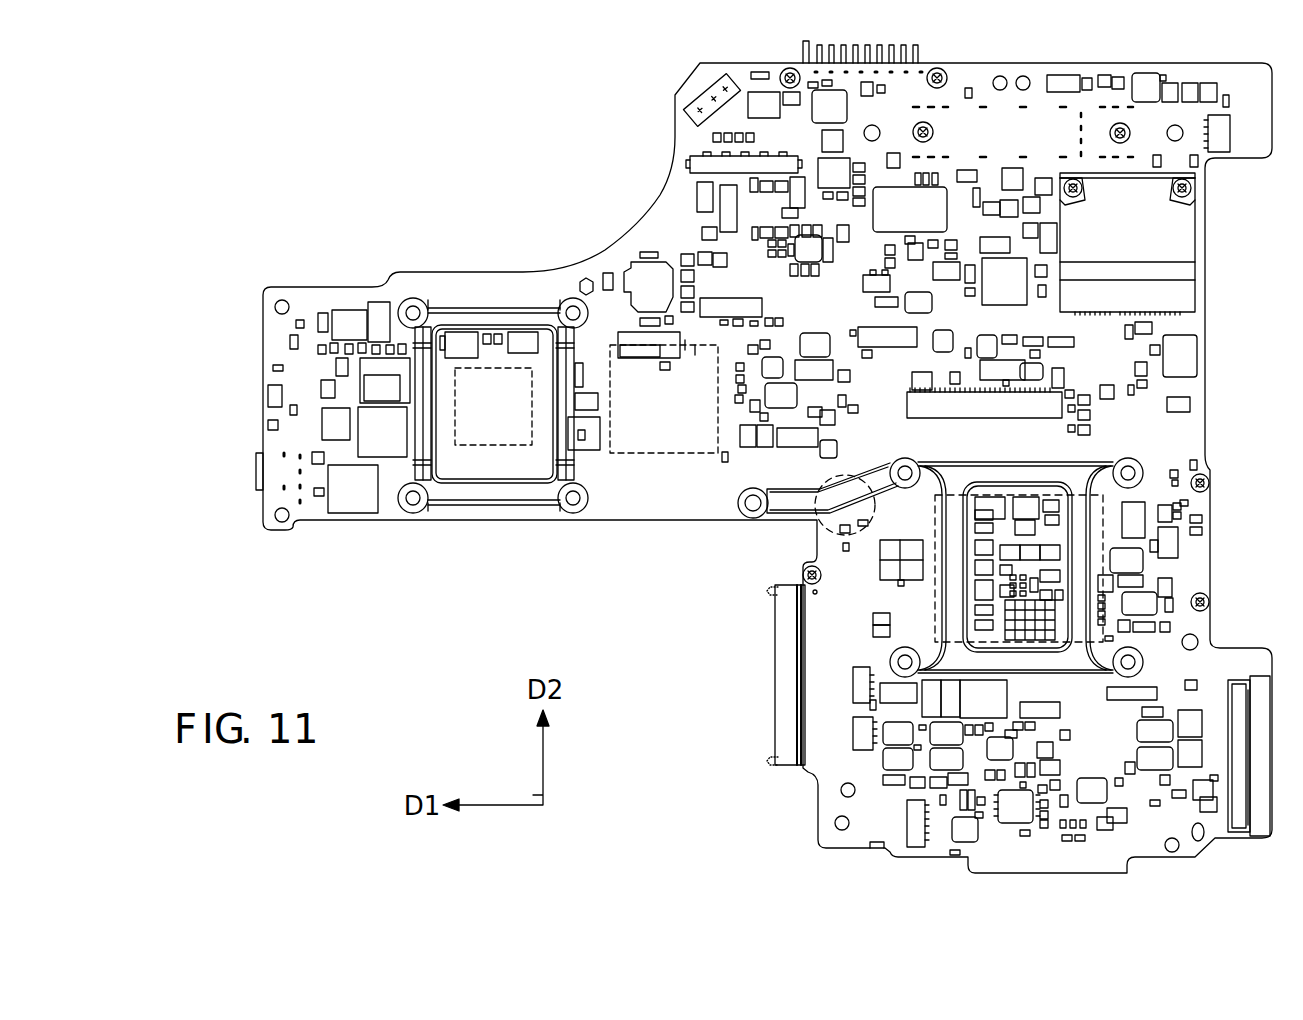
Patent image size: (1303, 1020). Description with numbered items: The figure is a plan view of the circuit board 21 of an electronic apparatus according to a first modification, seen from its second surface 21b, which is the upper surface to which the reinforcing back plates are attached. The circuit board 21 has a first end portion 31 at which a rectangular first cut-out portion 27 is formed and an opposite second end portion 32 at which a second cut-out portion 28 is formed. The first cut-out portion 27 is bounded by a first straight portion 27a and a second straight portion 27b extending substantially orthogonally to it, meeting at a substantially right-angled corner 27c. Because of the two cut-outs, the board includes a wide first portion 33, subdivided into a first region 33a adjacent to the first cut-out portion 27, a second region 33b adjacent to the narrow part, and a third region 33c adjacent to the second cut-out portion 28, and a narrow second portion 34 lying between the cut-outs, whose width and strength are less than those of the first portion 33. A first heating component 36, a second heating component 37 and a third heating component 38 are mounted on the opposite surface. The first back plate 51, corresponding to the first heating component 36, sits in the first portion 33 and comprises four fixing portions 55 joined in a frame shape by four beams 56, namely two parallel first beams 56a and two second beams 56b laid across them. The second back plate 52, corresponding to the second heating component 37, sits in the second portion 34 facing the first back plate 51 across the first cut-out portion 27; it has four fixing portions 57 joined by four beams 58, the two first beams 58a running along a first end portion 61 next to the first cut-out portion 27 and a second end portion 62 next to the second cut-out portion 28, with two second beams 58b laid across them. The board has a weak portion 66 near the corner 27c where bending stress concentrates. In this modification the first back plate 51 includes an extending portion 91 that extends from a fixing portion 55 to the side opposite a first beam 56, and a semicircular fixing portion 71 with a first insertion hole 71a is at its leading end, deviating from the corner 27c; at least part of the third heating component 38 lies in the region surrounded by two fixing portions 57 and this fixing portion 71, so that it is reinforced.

The circuit board 21 is at (1033, 97).
The second surface 21b is at (1060, 128).
The first cut-out portion 27 is at (617, 526).
The first straight portion 27a is at (487, 523).
The second straight portion 27b is at (816, 814).
The corner 27c is at (805, 526).
The second cut-out portion 28 is at (589, 252).
The first end portion 31 is at (1095, 842).
The second end portion 32 is at (988, 76).
The first portion 33 is at (1192, 432).
The first region 33a is at (873, 828).
The second region 33b is at (1128, 350).
The third region 33c is at (918, 82).
The second portion 34 is at (270, 346).
The first heating component 36 is at (1103, 497).
The second heating component 37 is at (511, 320).
The third heating component 38 is at (658, 312).
The first back plate 51 is at (1084, 484).
The second back plate 52 is at (508, 352).
The fixing portions 55 is at (900, 462).
The beams 56 is at (1015, 500).
The first beams 56a is at (975, 500).
The second beams 56b is at (955, 594).
The fixing portions 57 is at (408, 300).
The beams 58 is at (455, 318).
The first beams 58a is at (488, 318).
The second beams 58b is at (425, 430).
The first end portion 61 is at (533, 512).
The second end portion 62 is at (427, 292).
The weak portion 66 is at (825, 540).
The fixing portion 71 is at (748, 492).
The first insertion hole 71a is at (770, 496).
The extending portion 91 is at (845, 498).